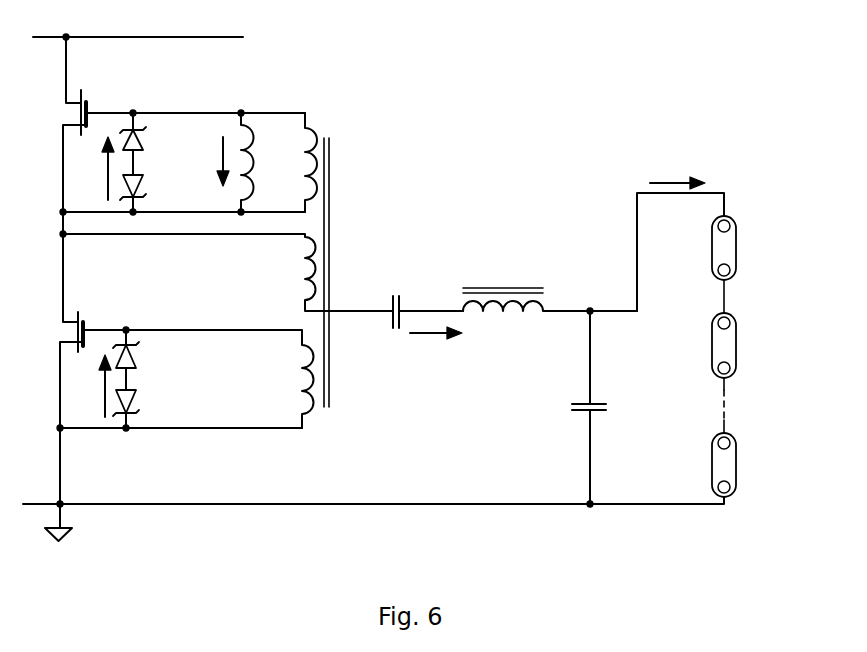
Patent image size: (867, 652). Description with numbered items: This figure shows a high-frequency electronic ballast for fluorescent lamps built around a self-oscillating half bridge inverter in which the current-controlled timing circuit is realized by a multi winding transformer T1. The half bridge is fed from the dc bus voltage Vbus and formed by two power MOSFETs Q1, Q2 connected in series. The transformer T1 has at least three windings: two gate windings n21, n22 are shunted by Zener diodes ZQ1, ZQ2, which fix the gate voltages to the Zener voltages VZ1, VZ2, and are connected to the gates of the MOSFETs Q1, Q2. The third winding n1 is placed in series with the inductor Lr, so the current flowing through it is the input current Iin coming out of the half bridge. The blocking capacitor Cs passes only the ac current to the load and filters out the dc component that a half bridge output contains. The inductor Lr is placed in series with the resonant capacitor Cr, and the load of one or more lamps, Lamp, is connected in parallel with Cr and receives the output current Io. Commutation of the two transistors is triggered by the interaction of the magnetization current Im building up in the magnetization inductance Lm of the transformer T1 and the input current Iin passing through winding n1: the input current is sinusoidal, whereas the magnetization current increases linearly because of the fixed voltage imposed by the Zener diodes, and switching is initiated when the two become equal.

The DC bus voltage Vbus is at (138, 25).
The power MOSFET Q1 is at (81, 124).
The power MOSFET Q2 is at (73, 358).
The Zener diodes ZQ1 is at (182, 162).
The Zener diodes ZQ2 is at (179, 379).
The Zener voltage VZ1 is at (93, 168).
The Zener voltage VZ2 is at (91, 387).
The magnetization current Im is at (207, 161).
The magnetization inductance Lm is at (219, 162).
The winding n21 is at (295, 162).
The third winding n1 is at (226, 271).
The winding n22 is at (220, 379).
The transformer T1 is at (338, 251).
The blocking capacitor Cs is at (426, 298).
The input current Iin is at (436, 351).
The inductor Lr is at (550, 288).
The capacitor Cr is at (600, 407).
The output current Io is at (677, 172).
The lamp Lamp is at (418, 348).